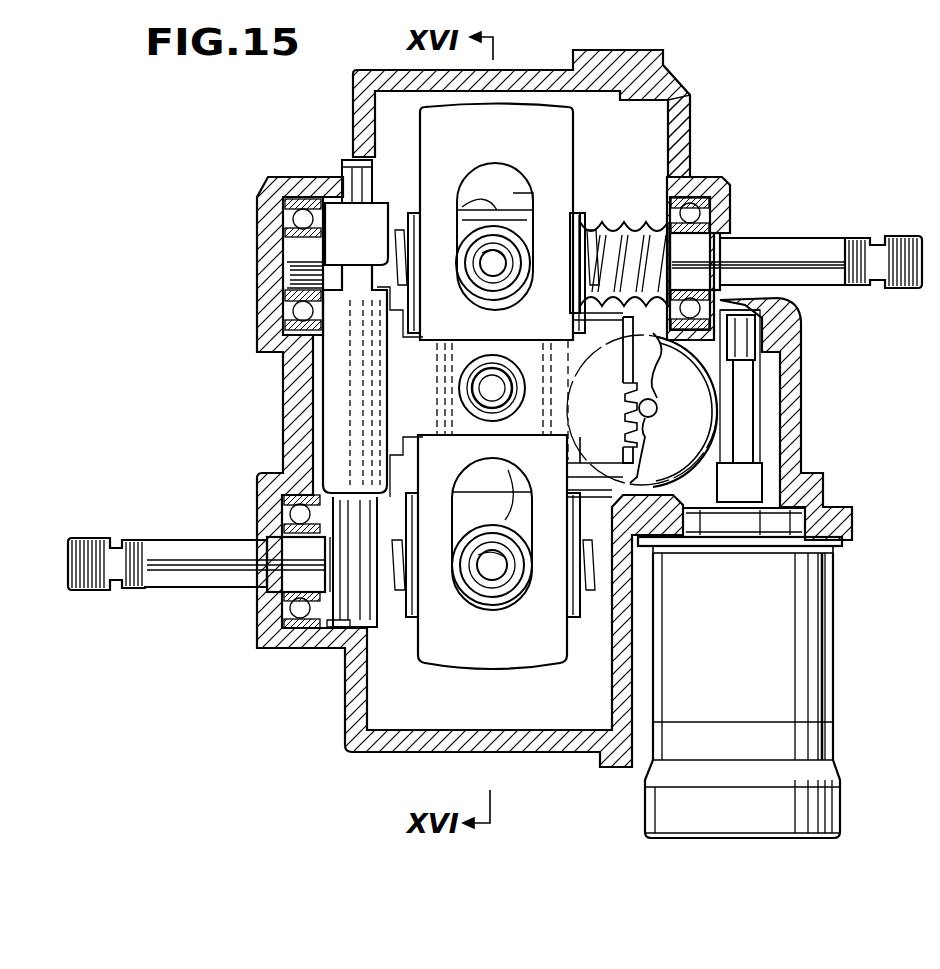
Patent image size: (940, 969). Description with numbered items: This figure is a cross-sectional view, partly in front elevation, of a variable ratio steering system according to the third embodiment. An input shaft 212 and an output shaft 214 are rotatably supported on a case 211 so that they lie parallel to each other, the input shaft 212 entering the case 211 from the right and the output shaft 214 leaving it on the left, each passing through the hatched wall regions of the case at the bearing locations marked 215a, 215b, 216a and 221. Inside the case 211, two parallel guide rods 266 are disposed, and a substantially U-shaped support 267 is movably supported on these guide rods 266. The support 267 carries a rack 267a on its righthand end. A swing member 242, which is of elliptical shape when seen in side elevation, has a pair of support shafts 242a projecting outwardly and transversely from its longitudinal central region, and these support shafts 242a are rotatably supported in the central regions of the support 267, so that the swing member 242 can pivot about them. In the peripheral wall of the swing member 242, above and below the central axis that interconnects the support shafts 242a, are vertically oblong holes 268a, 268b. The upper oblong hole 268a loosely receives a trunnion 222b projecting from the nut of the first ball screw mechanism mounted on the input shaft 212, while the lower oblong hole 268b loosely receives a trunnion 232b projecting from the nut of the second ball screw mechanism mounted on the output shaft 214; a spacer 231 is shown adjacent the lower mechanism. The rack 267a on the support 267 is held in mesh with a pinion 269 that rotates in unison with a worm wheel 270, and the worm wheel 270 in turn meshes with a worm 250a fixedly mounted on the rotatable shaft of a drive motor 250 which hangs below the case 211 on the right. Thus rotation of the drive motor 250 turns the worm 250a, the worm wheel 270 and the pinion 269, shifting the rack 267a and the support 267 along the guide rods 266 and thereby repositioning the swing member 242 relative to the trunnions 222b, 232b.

The case 211 is at (377, 743).
The input shaft 212 is at (820, 252).
The output shaft 214 is at (133, 574).
The bearing 215a is at (278, 217).
The bearing 215b is at (734, 258).
The bearing 216a is at (275, 652).
The housing wall 221 is at (657, 205).
The trunnion 222b is at (543, 232).
The spacer 231 is at (397, 620).
The trunnion 232b is at (483, 568).
The swing member 242 is at (538, 658).
The support shaft 242a is at (487, 390).
The drive motor 250 is at (800, 627).
The worm 250a is at (762, 425).
The guide rod 266 is at (348, 166).
The support 267 is at (335, 430).
The rack 267a is at (722, 329).
The oblong hole 268a is at (497, 167).
The oblong hole 268b is at (512, 470).
The pinion 269 is at (612, 420).
The worm wheel 270 is at (700, 393).